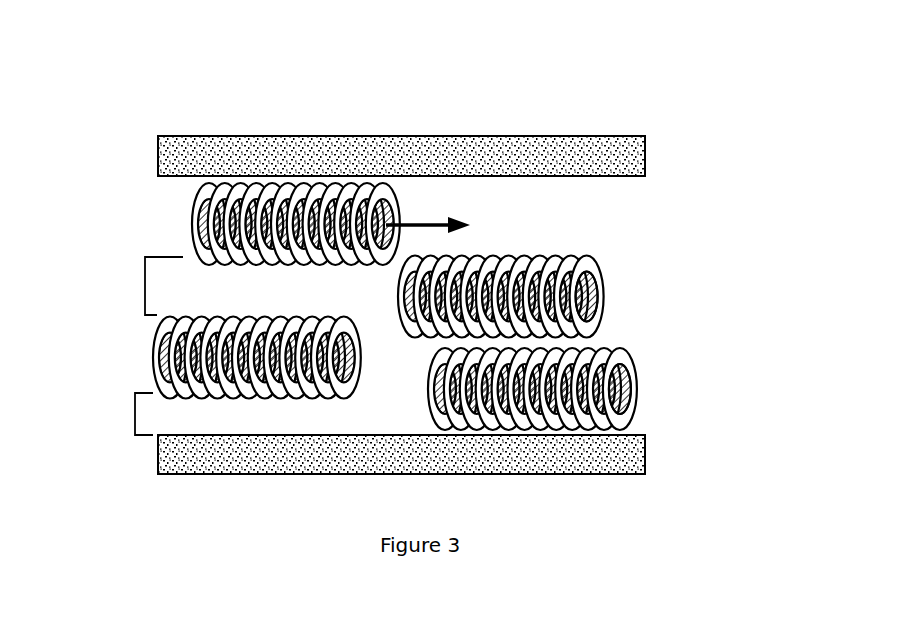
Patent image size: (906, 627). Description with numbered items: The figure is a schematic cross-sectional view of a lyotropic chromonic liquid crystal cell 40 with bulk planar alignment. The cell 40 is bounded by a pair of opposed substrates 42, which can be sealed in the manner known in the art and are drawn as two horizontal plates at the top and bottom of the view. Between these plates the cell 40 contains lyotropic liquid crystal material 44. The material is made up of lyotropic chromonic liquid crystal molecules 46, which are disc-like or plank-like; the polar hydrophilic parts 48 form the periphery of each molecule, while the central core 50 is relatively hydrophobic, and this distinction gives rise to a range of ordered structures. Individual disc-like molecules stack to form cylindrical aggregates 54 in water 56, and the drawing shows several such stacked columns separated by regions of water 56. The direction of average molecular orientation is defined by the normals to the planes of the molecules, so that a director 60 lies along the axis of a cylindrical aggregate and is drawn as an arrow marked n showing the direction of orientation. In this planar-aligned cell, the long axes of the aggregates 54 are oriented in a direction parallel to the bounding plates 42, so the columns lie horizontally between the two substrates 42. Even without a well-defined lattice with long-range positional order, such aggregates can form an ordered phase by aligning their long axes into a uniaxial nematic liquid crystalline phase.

The lyotropic chromonic liquid crystal cell 40 is at (123, 138).
The substrate 42 is at (645, 160).
The lyotropic liquid crystal material 44 is at (702, 304).
The lyotropic chromonic liquid crystal molecule 46 is at (618, 329).
The polar hydrophilic part 48 is at (592, 258).
The central core 50 is at (588, 284).
The cylindrical aggregate 54 is at (172, 216).
The water 56 is at (145, 283).
The director 60 is at (417, 222).